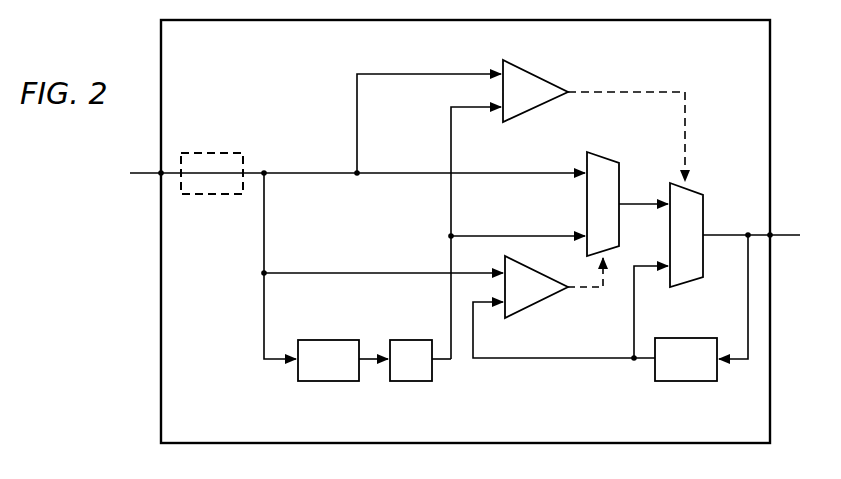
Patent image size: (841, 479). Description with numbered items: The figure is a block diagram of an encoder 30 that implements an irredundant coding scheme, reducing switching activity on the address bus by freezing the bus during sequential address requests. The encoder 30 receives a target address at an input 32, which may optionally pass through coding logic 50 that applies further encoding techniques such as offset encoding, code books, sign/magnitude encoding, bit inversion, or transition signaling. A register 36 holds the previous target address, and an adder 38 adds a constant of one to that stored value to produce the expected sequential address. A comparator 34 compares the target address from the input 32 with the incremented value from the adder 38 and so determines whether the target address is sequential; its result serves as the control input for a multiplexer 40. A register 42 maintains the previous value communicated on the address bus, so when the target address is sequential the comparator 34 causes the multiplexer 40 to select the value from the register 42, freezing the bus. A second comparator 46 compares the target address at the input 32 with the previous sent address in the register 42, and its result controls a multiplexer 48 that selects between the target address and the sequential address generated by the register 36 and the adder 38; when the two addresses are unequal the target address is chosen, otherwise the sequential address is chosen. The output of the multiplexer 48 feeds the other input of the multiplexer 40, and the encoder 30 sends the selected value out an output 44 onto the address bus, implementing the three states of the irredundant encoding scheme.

The encoder 30 is at (160, 280).
The input 32 is at (159, 171).
The comparator 34 is at (537, 72).
The register 36 is at (327, 382).
The adder 38 is at (412, 382).
The multiplexer 40 is at (692, 285).
The register 42 is at (686, 382).
The output 44 is at (772, 232).
The comparator 46 is at (540, 305).
The multiplexer 48 is at (602, 152).
The coding logic 50 is at (200, 152).